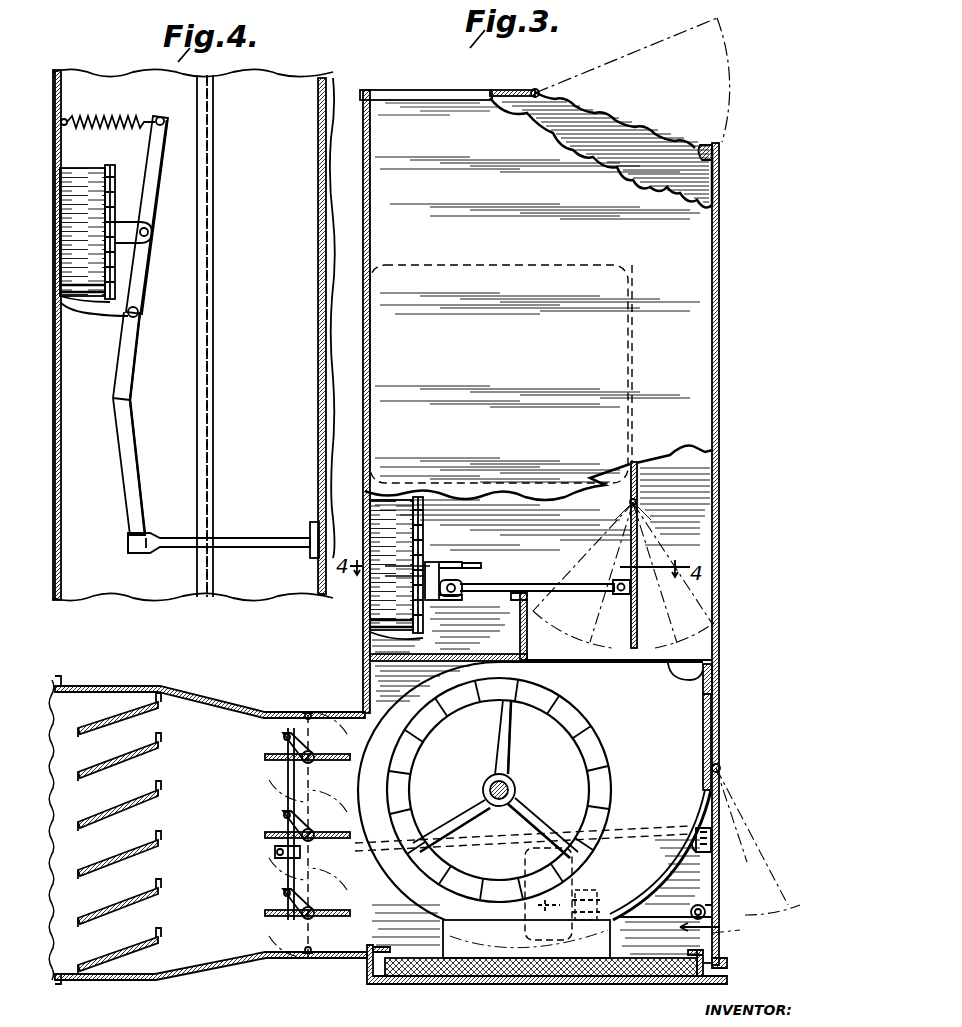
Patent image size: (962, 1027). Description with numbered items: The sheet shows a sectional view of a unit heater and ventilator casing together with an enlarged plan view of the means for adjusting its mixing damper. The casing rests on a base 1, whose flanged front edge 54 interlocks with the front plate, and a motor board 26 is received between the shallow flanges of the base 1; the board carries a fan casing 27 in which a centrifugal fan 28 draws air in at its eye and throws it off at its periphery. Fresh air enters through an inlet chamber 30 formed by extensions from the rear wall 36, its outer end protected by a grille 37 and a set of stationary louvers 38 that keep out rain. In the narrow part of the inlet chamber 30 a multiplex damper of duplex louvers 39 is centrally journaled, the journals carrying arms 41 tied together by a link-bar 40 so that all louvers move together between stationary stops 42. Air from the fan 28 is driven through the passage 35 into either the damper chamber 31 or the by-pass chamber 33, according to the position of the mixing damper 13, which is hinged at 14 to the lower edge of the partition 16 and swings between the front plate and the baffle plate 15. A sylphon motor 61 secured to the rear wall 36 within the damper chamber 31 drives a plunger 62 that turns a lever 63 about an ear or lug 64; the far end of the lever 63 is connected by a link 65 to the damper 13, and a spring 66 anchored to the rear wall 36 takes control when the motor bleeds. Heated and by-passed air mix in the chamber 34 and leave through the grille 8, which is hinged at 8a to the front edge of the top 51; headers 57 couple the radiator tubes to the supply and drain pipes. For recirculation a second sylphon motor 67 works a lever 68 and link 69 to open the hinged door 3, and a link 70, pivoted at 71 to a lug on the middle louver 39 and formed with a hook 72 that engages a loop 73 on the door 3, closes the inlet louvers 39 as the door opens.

In FIG. 3, the base 1 is at (492, 983).
In FIG. 3, the hinged door 3 is at (733, 850).
In FIG. 3, the hinged grille 8 is at (650, 128).
In FIG. 3, the hinge 8a is at (535, 88).
In FIG. 4, the mixing damper 13 is at (318, 348).
In FIG. 3, the mixing damper 13 is at (640, 618).
In FIG. 3, the hinge 14 is at (642, 497).
In FIG. 4, the baffle plate 15 is at (208, 200).
In FIG. 3, the baffle plate 15 is at (527, 636).
In FIG. 3, the partition 16 is at (660, 482).
In FIG. 3, the motor board 26 is at (420, 975).
In FIG. 3, the fan casing 27 is at (712, 732).
In FIG. 3, the centrifugal fan 28 is at (575, 740).
In FIG. 3, the inlet chamber 30 is at (212, 916).
In FIG. 3, the damper chamber 31 is at (495, 528).
In FIG. 3, the by-pass chamber 33 is at (698, 545).
In FIG. 3, the mixing and discharge chamber 34 is at (698, 171).
In FIG. 3, the passage 35 is at (714, 676).
In FIG. 4, the rear wall 36 is at (57, 380).
In FIG. 3, the rear wall 36 is at (360, 205).
In FIG. 3, the grille 37 is at (52, 965).
In FIG. 3, the stationary louvers 38 is at (162, 905).
In FIG. 3, the duplex louvers 39 is at (322, 768).
In FIG. 3, the link-bar 40 is at (288, 780).
In FIG. 3, the arms 41 is at (295, 745).
In FIG. 3, the stationary stops 42 is at (312, 714).
In FIG. 3, the top 51 is at (435, 95).
In FIG. 3, the front edge of the base 54 is at (728, 960).
In FIG. 3, the headers 57 is at (620, 487).
In FIG. 4, the sylphon motor 61 is at (86, 180).
In FIG. 3, the sylphon motor 61 is at (380, 598).
In FIG. 4, the plunger 62 is at (135, 224).
In FIG. 3, the plunger 62 is at (450, 560).
In FIG. 4, the lever 63 is at (143, 362).
In FIG. 3, the lever 63 is at (462, 597).
In FIG. 4, the ear or lug 64 is at (140, 316).
In FIG. 4, the link 65 is at (244, 538).
In FIG. 3, the link 65 is at (527, 582).
In FIG. 4, the spring 66 is at (130, 110).
In FIG. 3, the sylphon motor 67 is at (540, 935).
In FIG. 3, the lever 68 is at (600, 895).
In FIG. 3, the link 69 is at (600, 895).
In FIG. 3, the link 70 is at (645, 824).
In FIG. 3, the pivot 71 is at (275, 853).
In FIG. 3, the hook 72 is at (719, 772).
In FIG. 3, the loop 73 is at (714, 850).